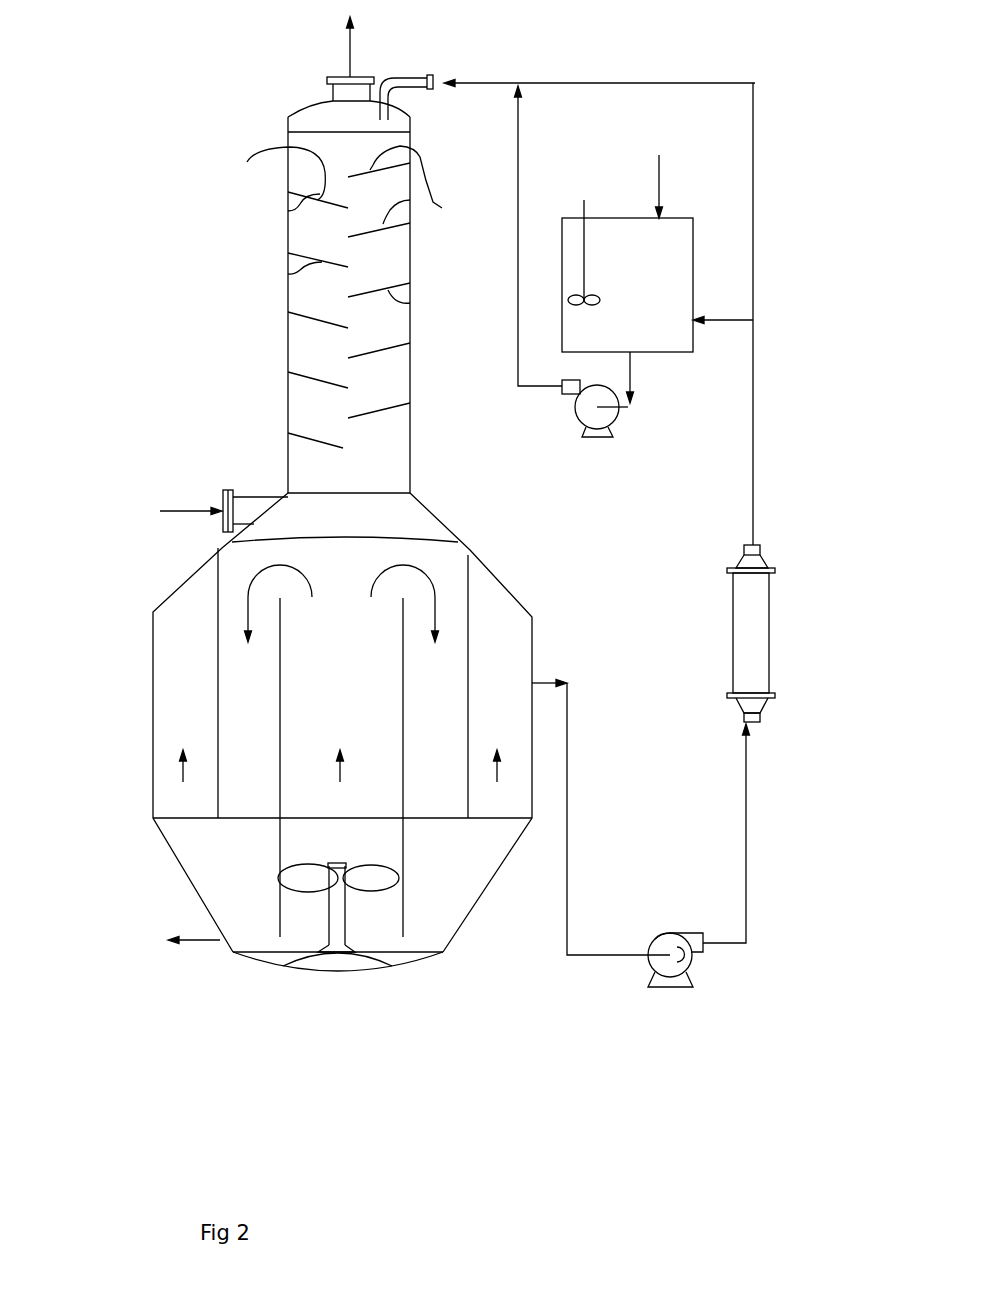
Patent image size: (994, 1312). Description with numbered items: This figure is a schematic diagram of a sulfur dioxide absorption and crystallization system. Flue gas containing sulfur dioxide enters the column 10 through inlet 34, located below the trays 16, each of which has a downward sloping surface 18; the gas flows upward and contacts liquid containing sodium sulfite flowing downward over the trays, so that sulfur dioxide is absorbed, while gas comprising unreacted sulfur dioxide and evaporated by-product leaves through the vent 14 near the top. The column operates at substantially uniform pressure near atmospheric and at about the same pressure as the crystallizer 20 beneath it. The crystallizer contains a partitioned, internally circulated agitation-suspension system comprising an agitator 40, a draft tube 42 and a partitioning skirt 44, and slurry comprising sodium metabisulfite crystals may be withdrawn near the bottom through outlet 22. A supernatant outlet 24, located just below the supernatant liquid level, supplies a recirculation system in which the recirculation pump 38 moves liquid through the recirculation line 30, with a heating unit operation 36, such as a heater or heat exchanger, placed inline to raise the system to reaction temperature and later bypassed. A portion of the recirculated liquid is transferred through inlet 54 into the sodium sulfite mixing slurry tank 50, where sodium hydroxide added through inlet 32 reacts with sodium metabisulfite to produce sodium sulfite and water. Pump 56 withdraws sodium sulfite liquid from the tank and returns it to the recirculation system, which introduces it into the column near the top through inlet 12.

The column 10 is at (248, 315).
The inlet 12 is at (432, 75).
The vent 14 is at (360, 77).
The trays 16 is at (290, 273).
The downward sloping surface 18 is at (346, 183).
The crystallizer 20 is at (118, 645).
The outlet 22 is at (198, 940).
The supernatant outlet 24 is at (553, 683).
The recirculation line 30 is at (755, 432).
The reactant inlet 32 is at (660, 187).
The inlet 34 is at (223, 492).
The heating unit operation 36 is at (769, 645).
The recirculation pump 38 is at (690, 977).
The agitator 40 is at (308, 892).
The draft tube 42 is at (278, 838).
The partitioning skirt 44 is at (213, 693).
The sodium sulfite mixing slurry tank 50 is at (668, 353).
The mixing slurry tank inlet 54 is at (727, 322).
The sodium sulfite slurry pump 56 is at (588, 438).